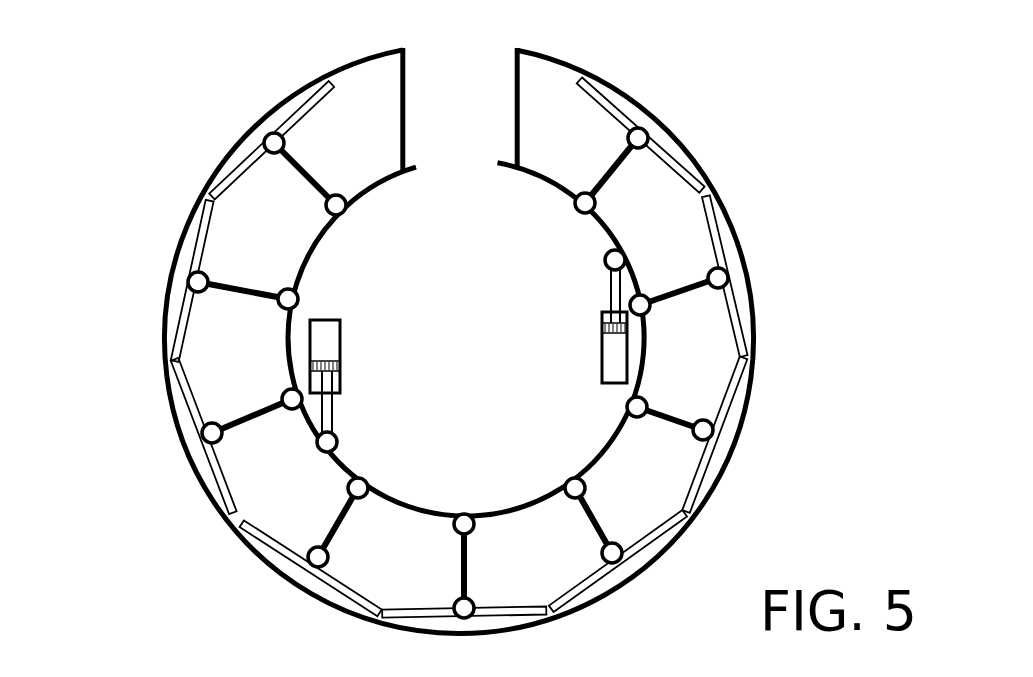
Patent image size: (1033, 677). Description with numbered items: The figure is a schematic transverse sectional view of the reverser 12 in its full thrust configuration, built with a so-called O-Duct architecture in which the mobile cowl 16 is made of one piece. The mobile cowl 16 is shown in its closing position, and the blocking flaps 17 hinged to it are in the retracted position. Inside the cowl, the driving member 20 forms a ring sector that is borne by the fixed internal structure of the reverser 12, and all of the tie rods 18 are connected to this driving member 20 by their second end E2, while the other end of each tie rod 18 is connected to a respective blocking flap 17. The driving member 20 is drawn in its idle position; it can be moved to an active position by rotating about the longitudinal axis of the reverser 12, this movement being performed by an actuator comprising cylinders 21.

The thrust reverser 12 is at (692, 99).
The mobile external structure 16 is at (378, 53).
The blocking flaps 17 is at (235, 167).
The tie rods 18 is at (297, 175).
The driving member 20 is at (500, 506).
The cylinders 21 is at (328, 344).
The second end E2 is at (337, 200).